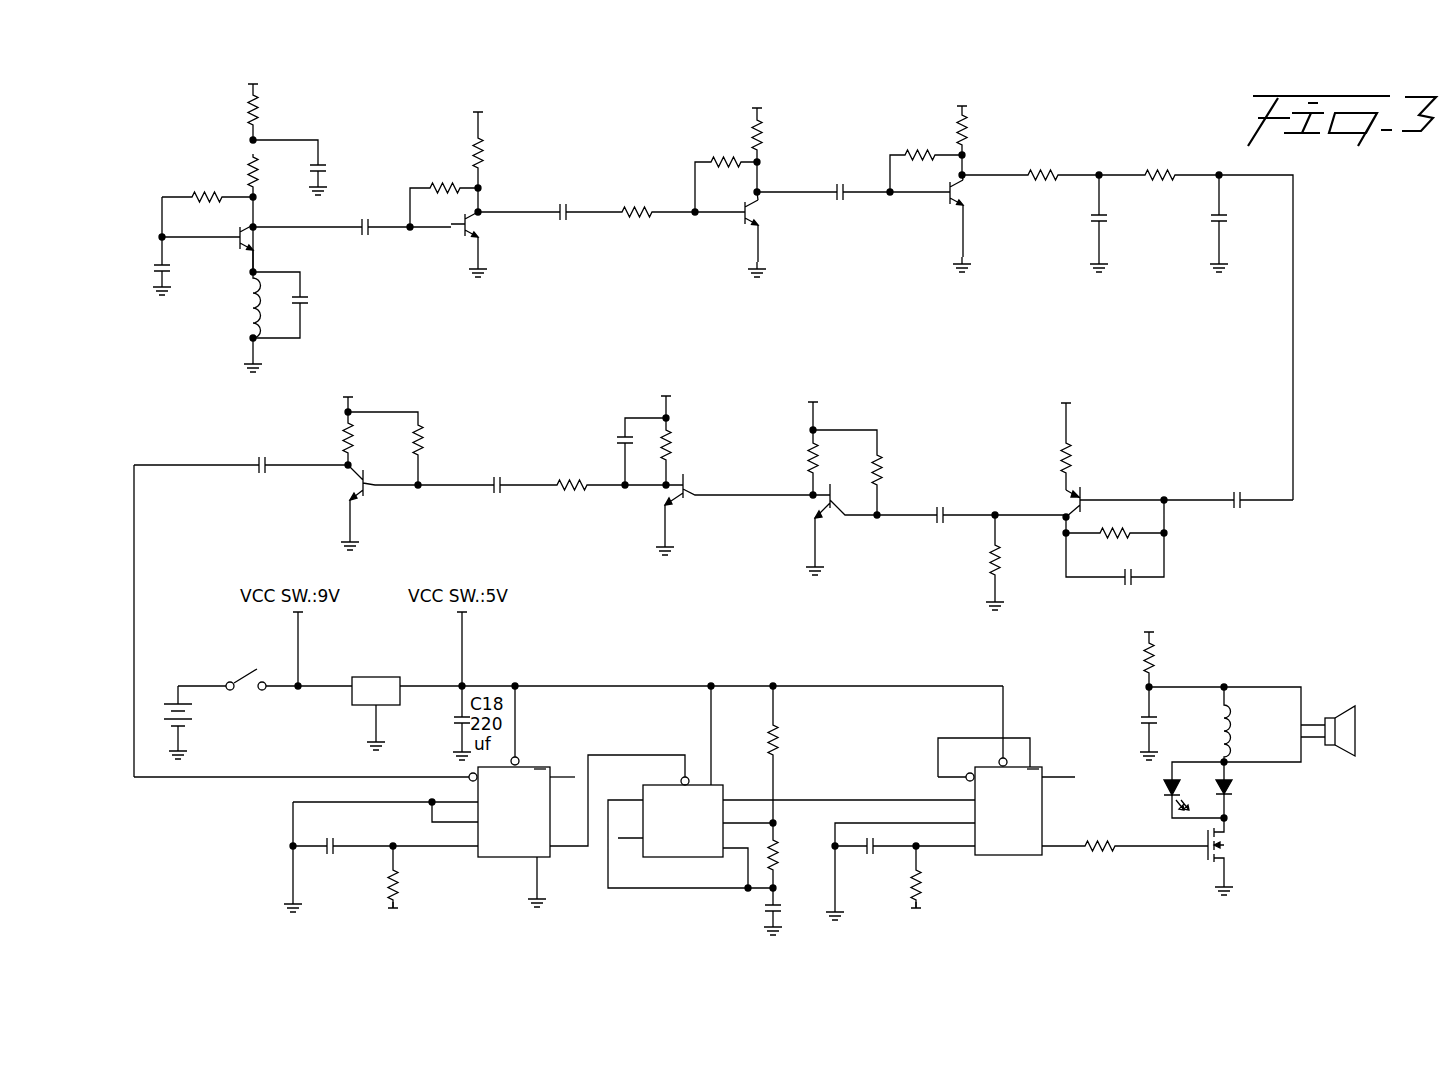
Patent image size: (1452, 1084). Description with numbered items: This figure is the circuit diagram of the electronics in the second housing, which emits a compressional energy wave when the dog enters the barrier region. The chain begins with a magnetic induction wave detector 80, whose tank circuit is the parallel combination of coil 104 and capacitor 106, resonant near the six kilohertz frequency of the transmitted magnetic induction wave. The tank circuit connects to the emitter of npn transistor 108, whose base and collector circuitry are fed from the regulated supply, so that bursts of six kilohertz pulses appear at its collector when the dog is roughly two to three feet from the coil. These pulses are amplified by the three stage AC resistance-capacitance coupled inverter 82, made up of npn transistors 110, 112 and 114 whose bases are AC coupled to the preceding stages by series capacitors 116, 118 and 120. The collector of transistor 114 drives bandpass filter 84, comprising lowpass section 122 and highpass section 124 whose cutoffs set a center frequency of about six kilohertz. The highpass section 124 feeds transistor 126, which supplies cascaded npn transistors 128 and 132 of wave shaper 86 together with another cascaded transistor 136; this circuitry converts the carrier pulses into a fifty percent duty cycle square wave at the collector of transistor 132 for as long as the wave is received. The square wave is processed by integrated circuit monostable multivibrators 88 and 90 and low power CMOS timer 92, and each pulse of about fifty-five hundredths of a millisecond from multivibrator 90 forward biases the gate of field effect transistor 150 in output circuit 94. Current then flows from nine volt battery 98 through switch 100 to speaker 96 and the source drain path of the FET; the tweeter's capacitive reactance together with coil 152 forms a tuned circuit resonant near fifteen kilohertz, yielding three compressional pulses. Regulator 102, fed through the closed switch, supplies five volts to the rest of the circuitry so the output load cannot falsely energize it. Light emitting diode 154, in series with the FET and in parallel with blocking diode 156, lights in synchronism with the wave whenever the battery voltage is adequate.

The magnetic induction wave detector 80 is at (267, 219).
The three stage AC resistance-capacitance coupled inverter 82 is at (645, 134).
The bandpass filter 84 is at (1223, 376).
The wave shaper 86 is at (661, 352).
The monostable multivibrator 88 is at (563, 726).
The monostable multivibrator 90 is at (1053, 932).
The low power CMOS timer 92 is at (691, 731).
The output circuit 94 is at (1261, 925).
The speaker 96 is at (1358, 722).
The battery 98 is at (165, 705).
The switch 100 is at (228, 680).
The regulator 102 is at (360, 703).
The coil 104 is at (247, 320).
The capacitor 106 is at (300, 316).
The npn transistor 108 is at (259, 249).
The npn transistor 110 is at (468, 241).
The npn transistor 112 is at (750, 233).
The npn transistor 114 is at (952, 213).
The series capacitor 116 is at (371, 217).
The series capacitor 118 is at (572, 207).
The series capacitor 120 is at (849, 186).
The lowpass section 122 is at (1176, 170).
The highpass section 124 is at (1168, 490).
The transistor 126 is at (1066, 494).
The npn transistor 128 is at (812, 520).
The npn transistor 132 is at (350, 493).
The transistor Q7 136 is at (660, 500).
The field effect transistor 150 is at (1217, 863).
The coil 152 is at (1238, 705).
The light emitting diode 154 is at (1167, 783).
The blocking diode 156 is at (1219, 793).